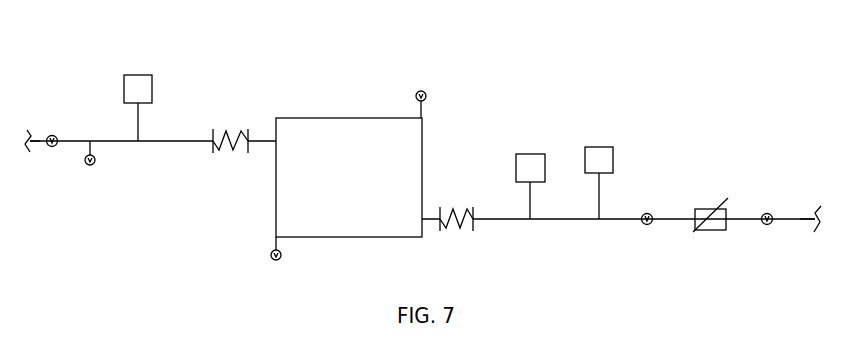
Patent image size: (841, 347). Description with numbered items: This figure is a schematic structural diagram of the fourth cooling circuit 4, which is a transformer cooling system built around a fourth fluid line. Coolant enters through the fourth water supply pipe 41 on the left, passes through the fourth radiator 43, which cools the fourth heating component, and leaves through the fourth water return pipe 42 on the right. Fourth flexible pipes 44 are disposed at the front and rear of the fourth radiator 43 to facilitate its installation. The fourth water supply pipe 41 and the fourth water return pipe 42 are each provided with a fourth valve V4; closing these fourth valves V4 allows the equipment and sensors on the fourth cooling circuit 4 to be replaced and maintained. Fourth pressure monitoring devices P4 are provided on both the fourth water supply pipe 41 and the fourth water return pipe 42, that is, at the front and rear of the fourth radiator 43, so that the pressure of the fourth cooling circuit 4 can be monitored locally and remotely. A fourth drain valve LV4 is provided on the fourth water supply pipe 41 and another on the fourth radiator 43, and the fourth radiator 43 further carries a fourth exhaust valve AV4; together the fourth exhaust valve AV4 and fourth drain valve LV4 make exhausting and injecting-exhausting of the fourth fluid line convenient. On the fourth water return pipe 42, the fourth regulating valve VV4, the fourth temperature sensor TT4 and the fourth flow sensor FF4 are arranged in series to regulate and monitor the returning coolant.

The fourth cooling circuit 4 is at (380, 46).
The fourth water supply pipe 41 is at (31, 140).
The fourth water return pipe 42 is at (805, 217).
The fourth radiator 43 is at (353, 128).
The fourth flexible pipes 44 is at (229, 146).
The fourth valves V4 is at (50, 149).
The fourth drain valve LV4 is at (93, 166).
The fourth pressure monitoring devices P4 is at (141, 126).
The fourth exhaust valve AV4 is at (427, 93).
The fourth temperature sensor TT4 is at (602, 200).
The fourth regulating valve VV4 is at (641, 225).
The fourth flow sensor FF4 is at (720, 220).